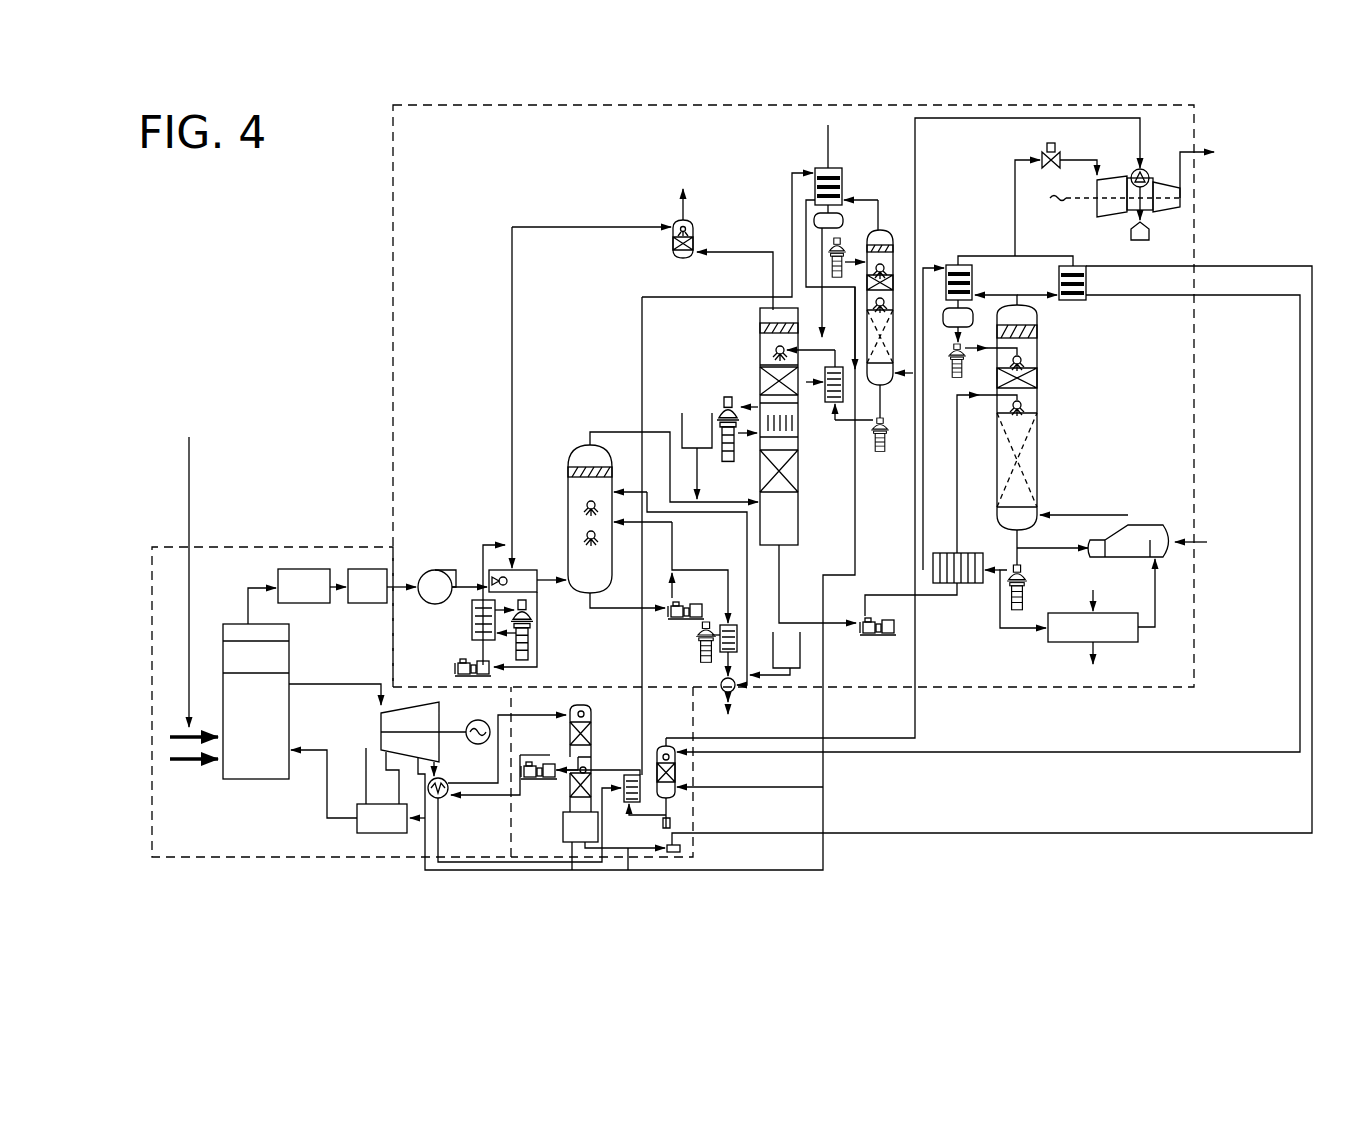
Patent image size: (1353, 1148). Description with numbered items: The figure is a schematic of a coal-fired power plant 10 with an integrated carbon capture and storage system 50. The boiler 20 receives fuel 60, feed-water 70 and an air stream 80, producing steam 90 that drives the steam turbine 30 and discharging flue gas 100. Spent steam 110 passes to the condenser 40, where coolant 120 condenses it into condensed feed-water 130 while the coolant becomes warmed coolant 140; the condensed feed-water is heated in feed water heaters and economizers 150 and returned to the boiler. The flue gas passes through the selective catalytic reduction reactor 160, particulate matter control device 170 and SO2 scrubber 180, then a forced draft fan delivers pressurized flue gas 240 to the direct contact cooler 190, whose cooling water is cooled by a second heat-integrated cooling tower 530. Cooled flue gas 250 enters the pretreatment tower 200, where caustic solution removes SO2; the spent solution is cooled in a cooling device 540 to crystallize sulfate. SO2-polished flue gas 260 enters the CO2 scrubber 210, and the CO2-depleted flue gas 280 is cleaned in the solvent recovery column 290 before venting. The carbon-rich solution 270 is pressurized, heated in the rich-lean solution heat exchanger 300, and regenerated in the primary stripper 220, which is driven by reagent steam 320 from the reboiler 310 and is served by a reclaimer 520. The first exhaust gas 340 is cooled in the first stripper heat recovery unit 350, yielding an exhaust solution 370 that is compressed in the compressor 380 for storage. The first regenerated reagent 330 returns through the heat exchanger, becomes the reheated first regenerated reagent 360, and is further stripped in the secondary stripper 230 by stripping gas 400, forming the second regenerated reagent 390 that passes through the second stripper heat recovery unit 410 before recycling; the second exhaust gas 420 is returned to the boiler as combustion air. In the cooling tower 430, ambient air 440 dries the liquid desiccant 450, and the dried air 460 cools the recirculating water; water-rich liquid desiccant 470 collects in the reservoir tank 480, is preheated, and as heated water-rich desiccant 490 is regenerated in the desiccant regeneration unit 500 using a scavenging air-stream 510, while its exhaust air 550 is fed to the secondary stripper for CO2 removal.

The power plant 10 is at (272, 866).
The boiler 20 is at (246, 724).
The steam turbine 30 is at (442, 714).
The condenser 40 is at (447, 798).
The post-combustion processing system 50 is at (1082, 739).
The fuel 60 is at (196, 764).
The feed-water 70 is at (327, 748).
The air stream 80 is at (186, 730).
The steam 90 is at (350, 683).
The flue gas 100 is at (246, 590).
The spent steam 110 is at (441, 769).
The coolant 120 is at (505, 872).
The condensed feed-water 130 is at (445, 861).
The warmed coolant 140 is at (499, 713).
The feed water heaters and economizers 150 is at (372, 835).
The selective catalytic reduction reactor 160 is at (289, 656).
The particulate matter control device 170 is at (297, 568).
The SO2 scrubber 180 is at (368, 568).
The direct contact cooler 190 is at (511, 548).
The pretreatment tower 200 is at (574, 452).
The CO2 scrubber 210 is at (800, 522).
The primary stripper 220 is at (1039, 400).
The secondary stripper 230 is at (882, 229).
The pressurized flue gas 240 is at (455, 571).
The cooled flue gas 250 is at (526, 568).
The SO2-polished flue gas 260 is at (610, 431).
The carbon-rich solution 270 is at (781, 580).
The CO2-depleted flue gas 280 is at (764, 252).
The solvent recovery column 290 is at (695, 221).
The rich-lean solution heat exchanger 300 is at (975, 585).
The reboiler 310 is at (1145, 525).
The reagent steam 320 is at (1090, 515).
The first regenerated reagent 330 is at (1012, 562).
The first exhaust gas 340 is at (1020, 300).
The first stripper heat recovery unit 350 is at (1088, 281).
The reheated first regenerated reagent 360 is at (926, 468).
The exhaust solution 370 is at (1013, 206).
The compressor 380 is at (1097, 216).
The second regenerated reagent 390 is at (888, 414).
The stripping gas 400 is at (914, 500).
The second stripper heat recovery unit 410 is at (829, 404).
The second exhaust gas 420 is at (846, 186).
The cooling tower 430 is at (592, 708).
The ambient air 440 is at (566, 803).
The liquid desiccant 450 is at (611, 787).
The dried air 460 is at (594, 746).
The water-rich liquid desiccant 470 is at (628, 869).
The reservoir tank 480 is at (572, 869).
The heated water-rich desiccant 490 is at (990, 752).
The desiccant regeneration unit 500 is at (678, 766).
The scavenging air-stream 510 is at (718, 789).
The reclaimer 520 is at (1112, 643).
The second heat-integrated cooling tower 530 is at (536, 616).
The cooling device 540 is at (471, 618).
The exhaust air 550 is at (760, 738).